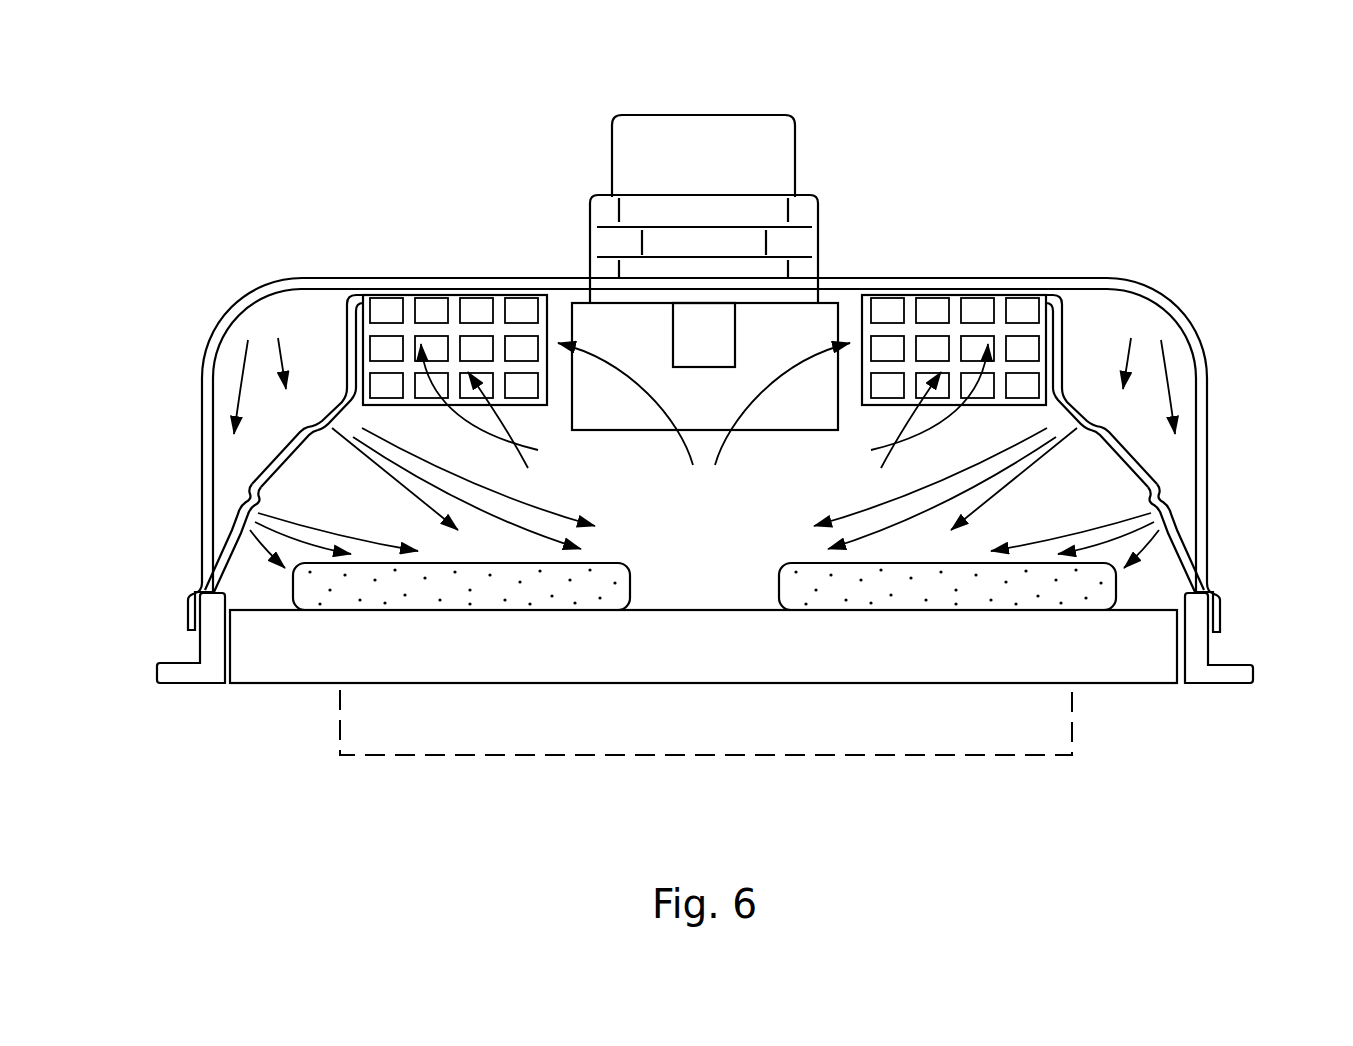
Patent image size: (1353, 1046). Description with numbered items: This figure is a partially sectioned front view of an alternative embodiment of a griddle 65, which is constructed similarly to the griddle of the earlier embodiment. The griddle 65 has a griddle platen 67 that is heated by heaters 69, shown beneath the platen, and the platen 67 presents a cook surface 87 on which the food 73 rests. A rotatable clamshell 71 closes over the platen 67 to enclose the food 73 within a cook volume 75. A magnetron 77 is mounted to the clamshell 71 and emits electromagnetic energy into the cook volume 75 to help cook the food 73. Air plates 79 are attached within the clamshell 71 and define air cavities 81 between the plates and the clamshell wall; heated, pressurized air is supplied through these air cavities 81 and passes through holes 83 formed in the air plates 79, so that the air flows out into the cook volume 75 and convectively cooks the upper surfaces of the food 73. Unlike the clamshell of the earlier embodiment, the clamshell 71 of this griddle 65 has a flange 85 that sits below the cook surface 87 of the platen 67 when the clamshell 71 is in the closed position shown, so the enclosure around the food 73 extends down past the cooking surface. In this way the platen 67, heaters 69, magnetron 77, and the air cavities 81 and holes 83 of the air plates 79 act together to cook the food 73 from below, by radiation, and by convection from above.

The griddle 65 is at (994, 156).
The griddle platen 67 is at (1152, 684).
The heaters 69 is at (990, 743).
The rotatable clamshell 71 is at (1110, 272).
The food 73 is at (308, 582).
The cook volume 75 is at (313, 485).
The magnetron 77 is at (797, 148).
The air plates 79 is at (252, 482).
The air cavities 81 is at (256, 334).
The holes 83 is at (333, 403).
The mounting bracket 85 is at (1242, 670).
The cook surface 87 is at (700, 596).